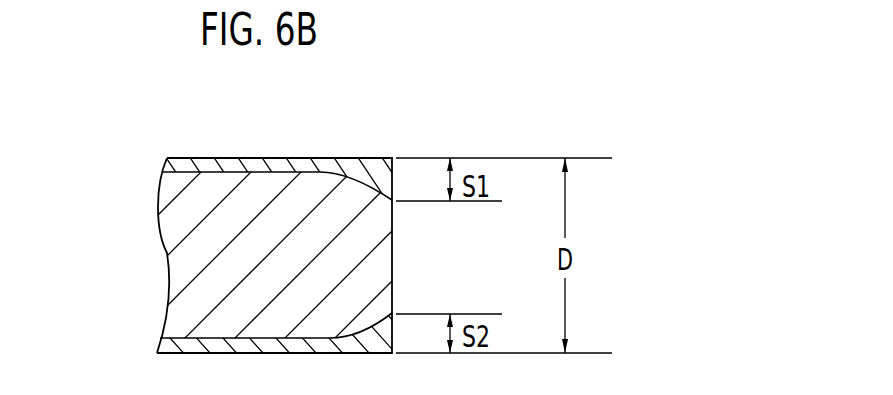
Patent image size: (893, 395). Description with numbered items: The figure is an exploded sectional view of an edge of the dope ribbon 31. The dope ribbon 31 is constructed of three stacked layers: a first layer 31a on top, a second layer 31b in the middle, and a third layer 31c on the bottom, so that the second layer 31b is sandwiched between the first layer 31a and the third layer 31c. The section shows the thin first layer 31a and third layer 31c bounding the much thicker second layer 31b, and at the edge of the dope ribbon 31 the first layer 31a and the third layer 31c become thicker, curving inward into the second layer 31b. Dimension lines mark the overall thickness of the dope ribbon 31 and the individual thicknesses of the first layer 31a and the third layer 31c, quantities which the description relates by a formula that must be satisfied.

The dope ribbon 31 is at (295, 227).
The first layer 31a is at (166, 166).
The second layer 31b is at (166, 253).
The third layer 31c is at (158, 341).